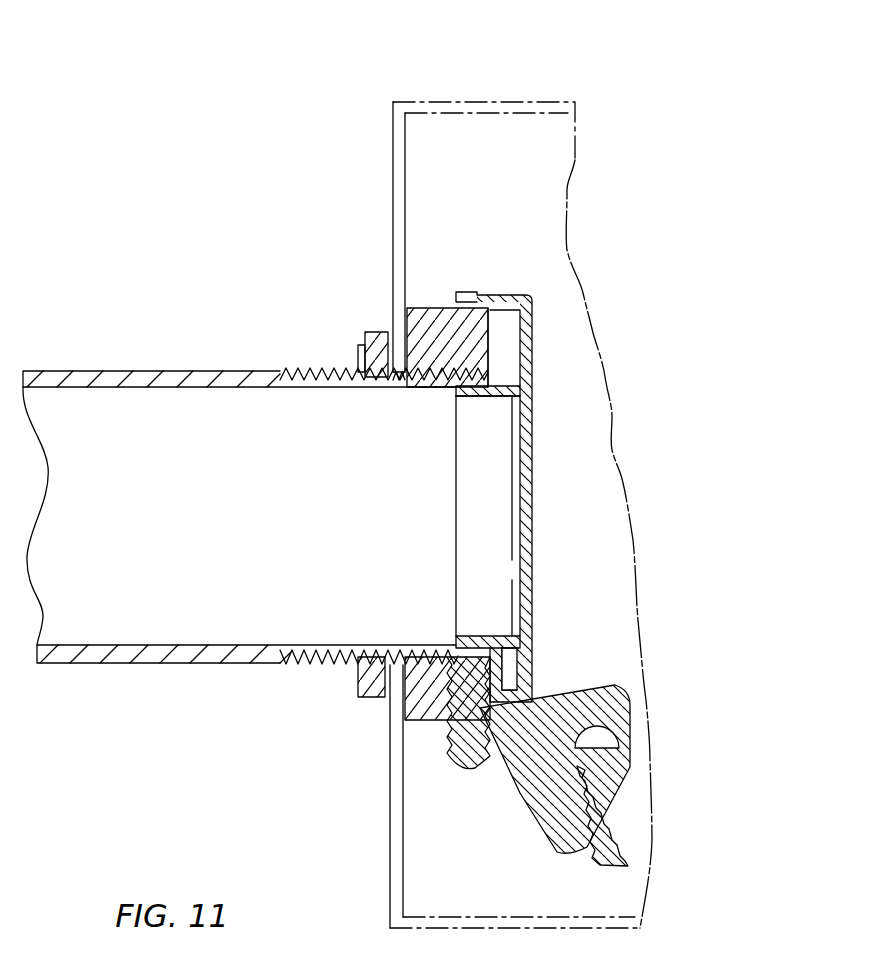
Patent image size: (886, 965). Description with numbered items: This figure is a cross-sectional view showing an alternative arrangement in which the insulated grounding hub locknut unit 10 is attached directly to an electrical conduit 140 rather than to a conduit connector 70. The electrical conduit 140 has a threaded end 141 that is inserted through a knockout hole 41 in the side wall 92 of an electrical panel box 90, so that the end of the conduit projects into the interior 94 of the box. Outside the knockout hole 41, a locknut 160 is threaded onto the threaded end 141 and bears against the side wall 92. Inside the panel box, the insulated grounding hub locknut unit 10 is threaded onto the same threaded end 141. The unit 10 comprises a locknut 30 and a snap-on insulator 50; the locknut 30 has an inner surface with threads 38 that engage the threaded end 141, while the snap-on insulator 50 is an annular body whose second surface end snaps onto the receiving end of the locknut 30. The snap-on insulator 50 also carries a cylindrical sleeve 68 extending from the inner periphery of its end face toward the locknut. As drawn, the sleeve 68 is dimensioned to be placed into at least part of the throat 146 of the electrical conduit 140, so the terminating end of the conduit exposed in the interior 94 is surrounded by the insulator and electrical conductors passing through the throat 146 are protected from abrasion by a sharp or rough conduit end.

The insulated grounding hub locknut unit 10 is at (484, 262).
The locknut 30 is at (405, 722).
The threads 38 is at (388, 705).
The knockout hole 41 is at (398, 387).
The snap-on insulator 50 is at (533, 530).
The cylindrical sleeve 68 is at (480, 396).
The conduit connector 70 is at (395, 385).
The electrical panel box 90 is at (540, 88).
The side wall 92 is at (392, 228).
The interior 94 is at (463, 195).
The electrical conduit 140 is at (165, 371).
The threaded end 141 is at (316, 356).
The throat 146 is at (393, 530).
The locknut 160 is at (372, 332).